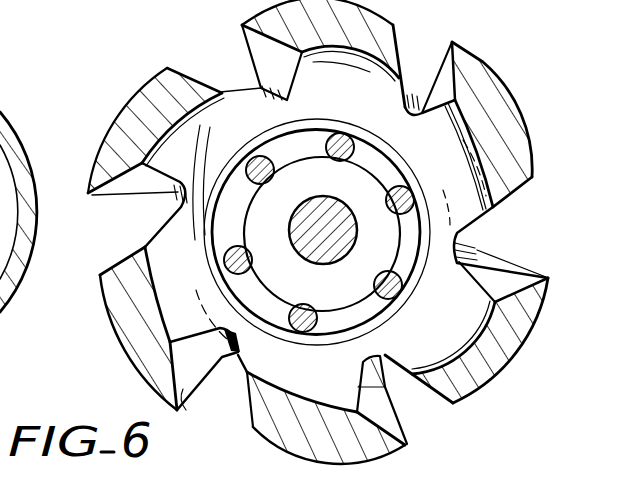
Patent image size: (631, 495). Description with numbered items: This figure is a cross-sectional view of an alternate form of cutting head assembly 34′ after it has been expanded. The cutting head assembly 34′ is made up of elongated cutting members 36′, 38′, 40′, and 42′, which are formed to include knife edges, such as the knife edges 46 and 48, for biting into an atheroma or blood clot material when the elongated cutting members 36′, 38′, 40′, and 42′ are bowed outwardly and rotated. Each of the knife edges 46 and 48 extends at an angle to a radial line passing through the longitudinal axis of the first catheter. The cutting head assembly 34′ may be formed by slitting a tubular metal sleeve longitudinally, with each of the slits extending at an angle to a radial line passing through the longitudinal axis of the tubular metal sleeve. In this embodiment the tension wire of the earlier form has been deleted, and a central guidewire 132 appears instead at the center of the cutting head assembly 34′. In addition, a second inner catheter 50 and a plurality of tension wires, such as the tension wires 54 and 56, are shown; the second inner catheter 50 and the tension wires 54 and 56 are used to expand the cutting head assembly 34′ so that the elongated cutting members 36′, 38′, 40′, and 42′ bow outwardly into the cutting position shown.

The cutting head assembly 34′ is at (111, 86).
The elongated cutting member 36′ is at (372, 35).
The elongated cutting member 38′ is at (162, 88).
The elongated cutting member 40′ is at (116, 302).
The elongated cutting member 42′ is at (262, 405).
The knife edge 46 is at (113, 194).
The knife edge 48 is at (182, 388).
The second inner catheter 50 is at (383, 168).
The tension wire 54 is at (366, 106).
The tension wire 56 is at (301, 331).
The central guidewire 132 is at (346, 182).